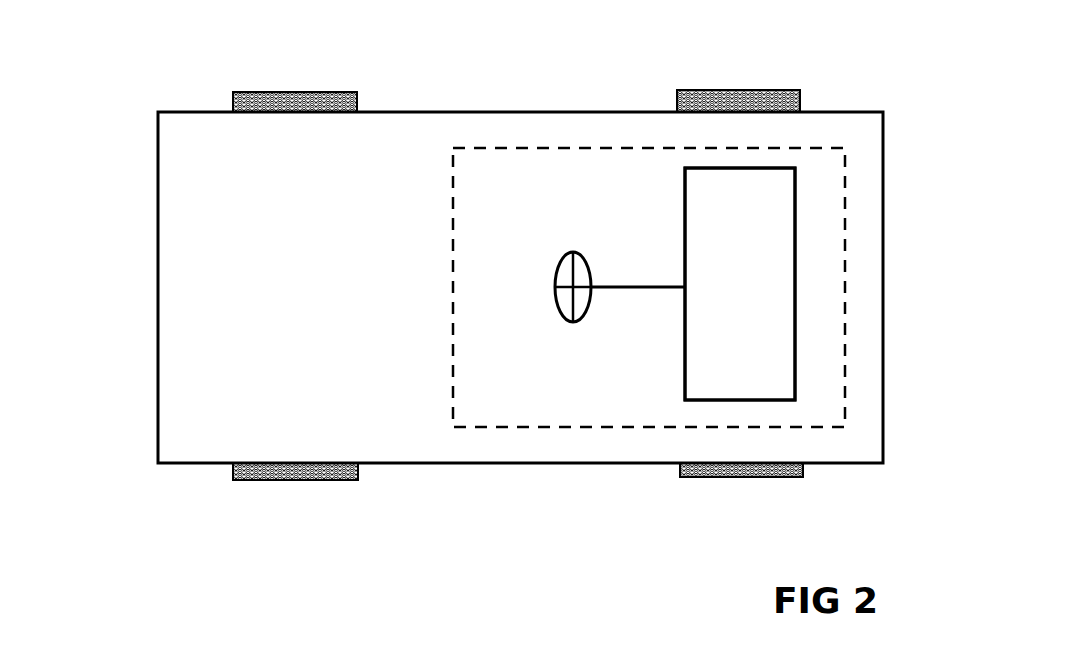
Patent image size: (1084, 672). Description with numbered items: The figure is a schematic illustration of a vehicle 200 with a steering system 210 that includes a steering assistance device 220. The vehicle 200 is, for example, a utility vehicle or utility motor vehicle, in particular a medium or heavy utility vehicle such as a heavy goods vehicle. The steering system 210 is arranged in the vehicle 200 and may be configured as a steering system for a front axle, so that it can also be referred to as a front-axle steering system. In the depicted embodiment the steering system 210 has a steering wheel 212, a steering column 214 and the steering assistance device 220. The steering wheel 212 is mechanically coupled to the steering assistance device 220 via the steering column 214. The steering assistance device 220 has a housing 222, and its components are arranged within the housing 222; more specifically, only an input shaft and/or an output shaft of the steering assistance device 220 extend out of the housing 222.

The vehicle 200 is at (200, 30).
The steering system 210 is at (475, 148).
The steering wheel 212 is at (566, 322).
The steering column 214 is at (640, 283).
The steering assistance device 220 is at (784, 166).
The housing 222 is at (685, 360).